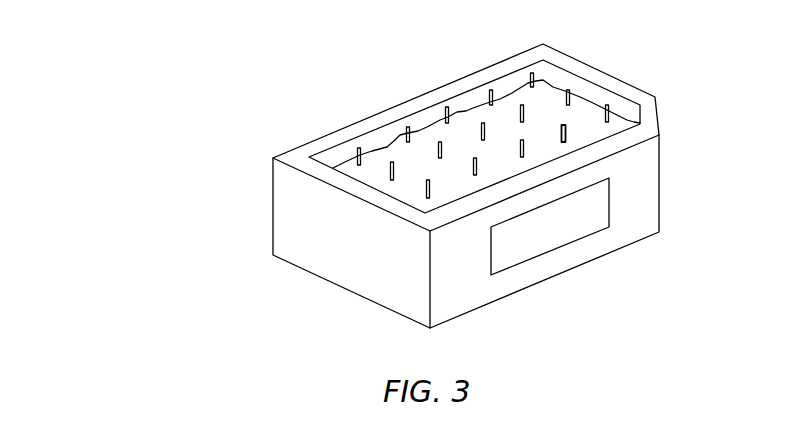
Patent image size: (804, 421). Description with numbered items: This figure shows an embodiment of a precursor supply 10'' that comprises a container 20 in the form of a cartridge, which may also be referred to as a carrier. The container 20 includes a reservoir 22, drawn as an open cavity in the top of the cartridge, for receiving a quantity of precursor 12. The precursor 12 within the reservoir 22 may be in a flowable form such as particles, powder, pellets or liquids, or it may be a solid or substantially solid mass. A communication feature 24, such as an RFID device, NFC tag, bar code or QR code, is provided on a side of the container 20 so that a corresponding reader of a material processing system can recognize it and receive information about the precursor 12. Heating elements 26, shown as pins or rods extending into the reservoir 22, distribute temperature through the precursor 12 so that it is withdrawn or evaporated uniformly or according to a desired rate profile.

The precursor supply 10'' is at (382, 177).
The precursor 12 is at (423, 128).
The container 20 is at (282, 195).
The reservoir 22 is at (475, 93).
The communication feature 24 is at (580, 228).
The heating elements 26 is at (566, 135).